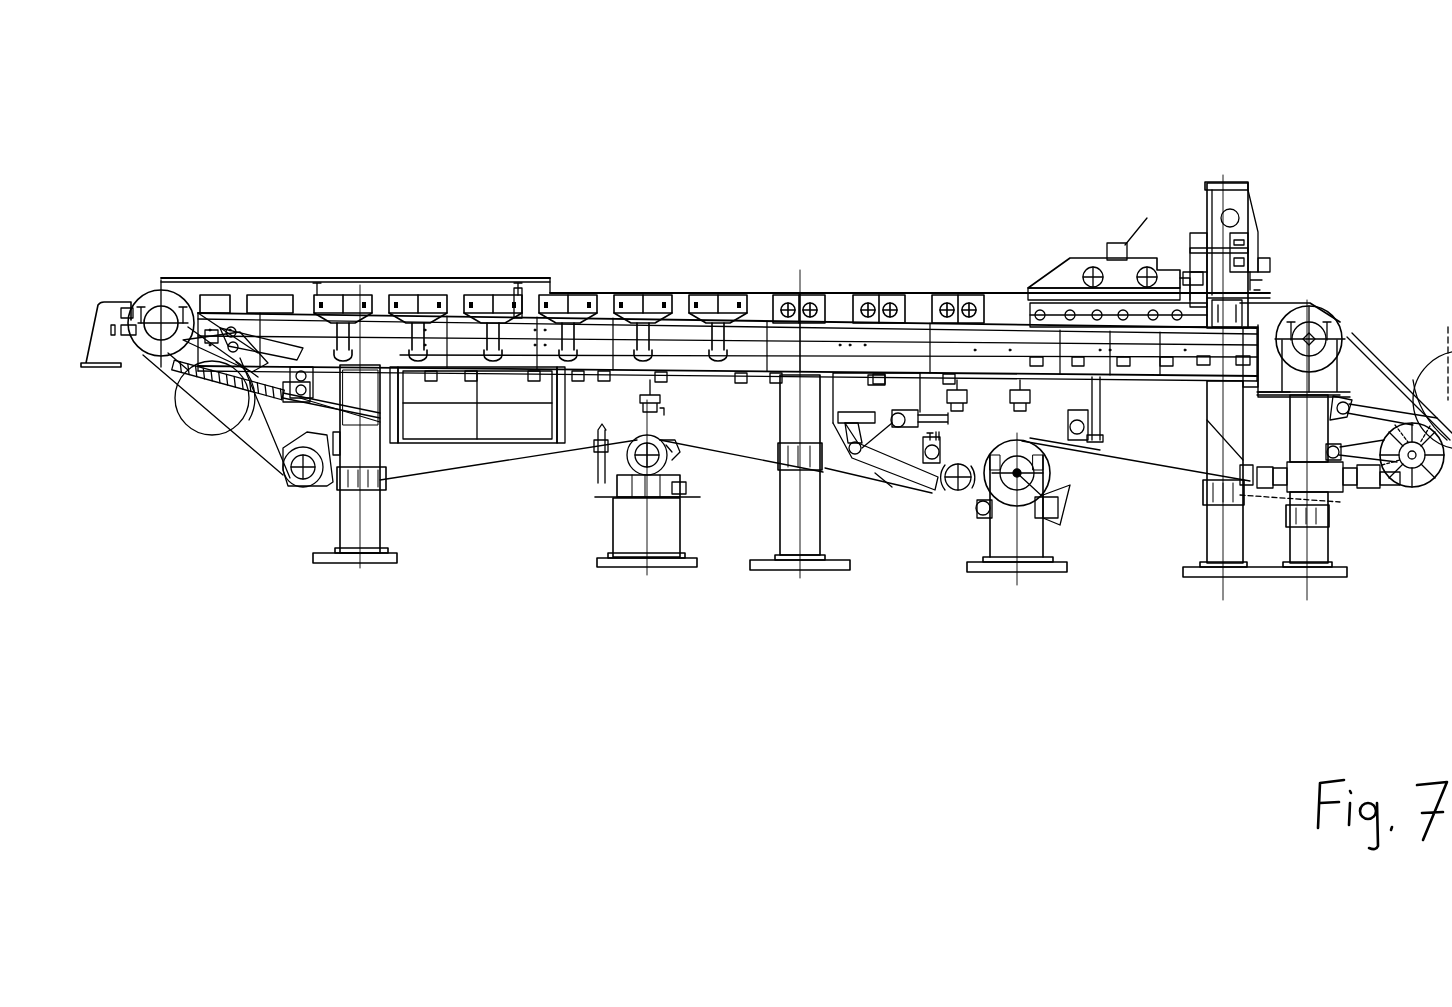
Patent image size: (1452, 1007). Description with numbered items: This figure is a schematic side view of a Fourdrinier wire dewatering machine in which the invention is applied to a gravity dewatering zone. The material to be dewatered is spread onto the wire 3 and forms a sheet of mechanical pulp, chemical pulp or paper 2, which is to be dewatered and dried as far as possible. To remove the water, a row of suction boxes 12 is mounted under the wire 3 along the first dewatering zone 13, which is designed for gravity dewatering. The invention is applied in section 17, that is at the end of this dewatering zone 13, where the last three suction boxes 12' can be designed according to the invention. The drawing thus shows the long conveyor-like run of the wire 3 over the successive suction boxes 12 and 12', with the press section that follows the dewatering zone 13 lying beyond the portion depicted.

The paper 2 is at (604, 293).
The wire 3 is at (727, 287).
The suction box 12 is at (473, 280).
The suction box 12' is at (889, 260).
The first dewatering zone 13 is at (823, 73).
The section 17 is at (1010, 158).